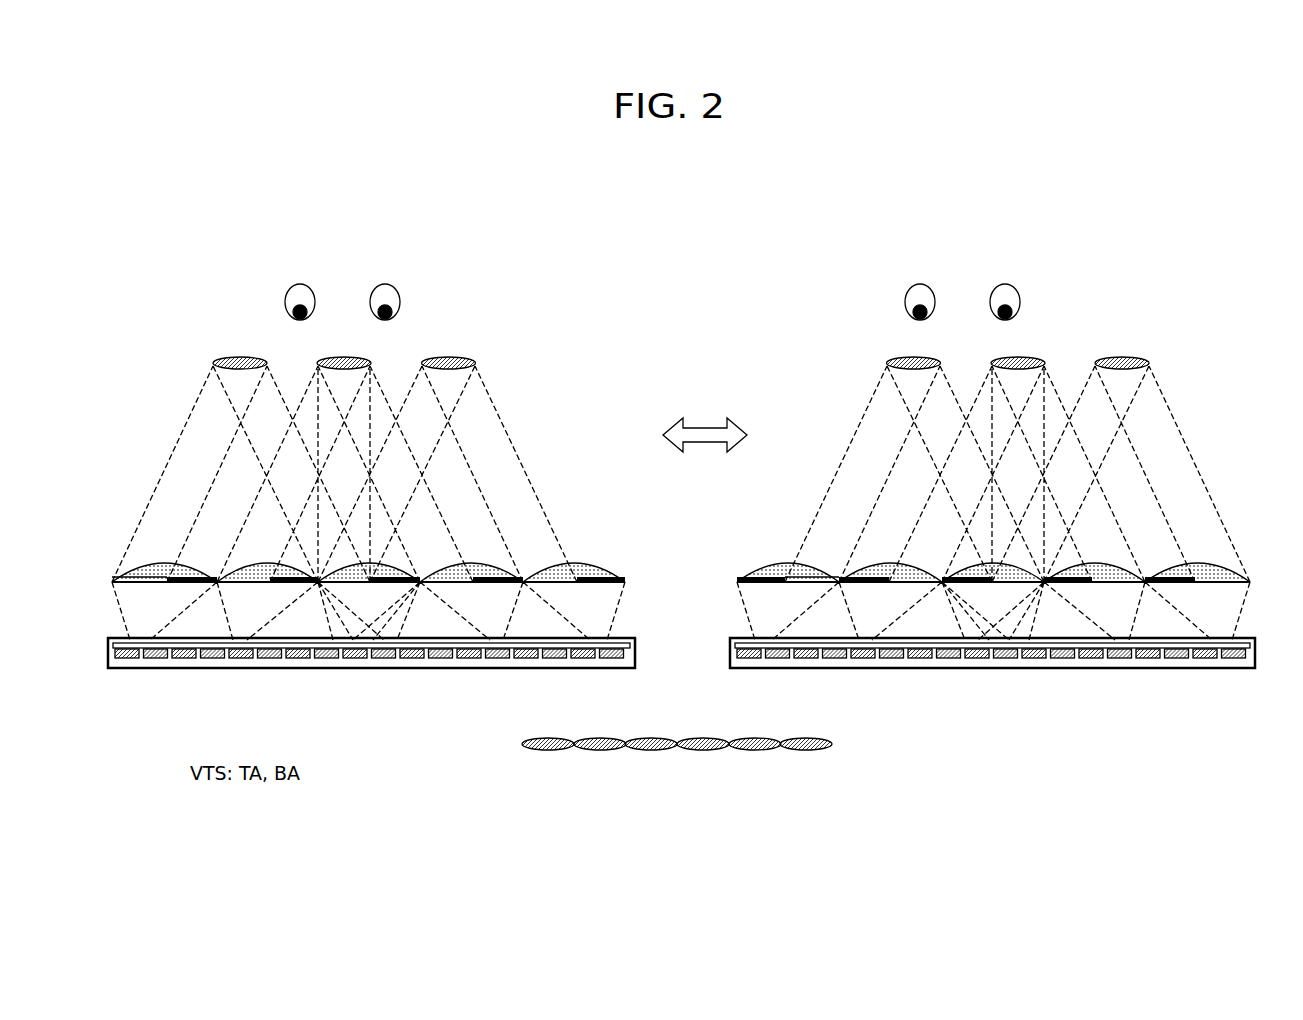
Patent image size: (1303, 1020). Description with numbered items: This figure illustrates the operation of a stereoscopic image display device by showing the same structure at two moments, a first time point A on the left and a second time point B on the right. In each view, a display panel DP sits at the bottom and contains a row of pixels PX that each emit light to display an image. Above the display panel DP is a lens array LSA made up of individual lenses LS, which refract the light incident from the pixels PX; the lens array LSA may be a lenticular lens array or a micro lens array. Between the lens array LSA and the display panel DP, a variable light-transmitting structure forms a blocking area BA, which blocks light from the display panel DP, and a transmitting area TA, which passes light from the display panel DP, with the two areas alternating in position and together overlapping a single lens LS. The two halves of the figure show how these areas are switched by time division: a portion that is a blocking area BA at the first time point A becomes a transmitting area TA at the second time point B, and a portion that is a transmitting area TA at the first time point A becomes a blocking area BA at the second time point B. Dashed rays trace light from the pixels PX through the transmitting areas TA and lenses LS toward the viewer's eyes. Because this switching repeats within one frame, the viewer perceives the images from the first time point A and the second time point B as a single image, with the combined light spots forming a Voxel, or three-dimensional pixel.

The first time point A is at (353, 258).
The second time point B is at (955, 258).
The lens LS is at (703, 540).
The lens array LSA is at (588, 573).
The transmitting area TA is at (165, 586).
The blocking area BA is at (215, 586).
The display panel DP is at (122, 668).
The pixel PX is at (585, 658).
The voxel (3D pixel) Voxel is at (677, 763).